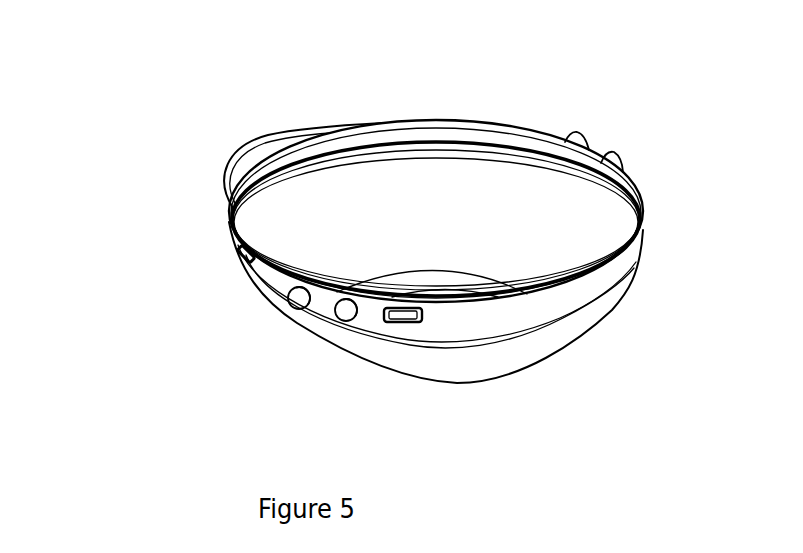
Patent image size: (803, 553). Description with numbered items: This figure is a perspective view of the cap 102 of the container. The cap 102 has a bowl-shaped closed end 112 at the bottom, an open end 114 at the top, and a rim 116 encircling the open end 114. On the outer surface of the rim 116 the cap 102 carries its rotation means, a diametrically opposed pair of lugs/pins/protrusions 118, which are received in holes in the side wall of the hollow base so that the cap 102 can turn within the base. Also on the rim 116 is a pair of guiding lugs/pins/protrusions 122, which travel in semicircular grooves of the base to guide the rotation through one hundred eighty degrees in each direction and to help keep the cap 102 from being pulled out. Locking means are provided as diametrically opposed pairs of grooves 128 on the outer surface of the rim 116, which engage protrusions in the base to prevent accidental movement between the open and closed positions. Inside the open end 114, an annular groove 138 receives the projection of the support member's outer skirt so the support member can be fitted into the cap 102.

The cap 102 is at (142, 217).
The closed end 112 is at (460, 381).
The open end 114 is at (447, 173).
The rim 116 is at (612, 273).
The lugs/pins/protrusions 118 is at (289, 301).
The lugs/pins/protrusions 122 is at (336, 313).
The grooves 128 is at (236, 256).
The annular groove 138 is at (603, 180).